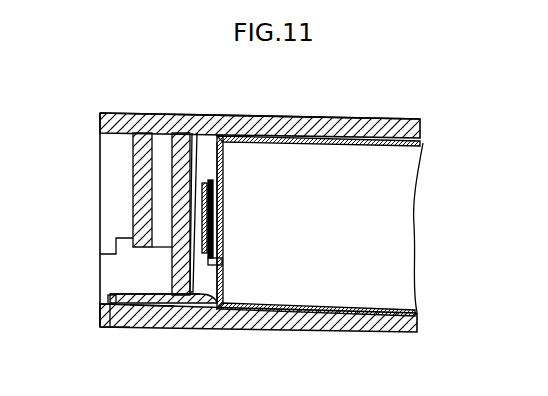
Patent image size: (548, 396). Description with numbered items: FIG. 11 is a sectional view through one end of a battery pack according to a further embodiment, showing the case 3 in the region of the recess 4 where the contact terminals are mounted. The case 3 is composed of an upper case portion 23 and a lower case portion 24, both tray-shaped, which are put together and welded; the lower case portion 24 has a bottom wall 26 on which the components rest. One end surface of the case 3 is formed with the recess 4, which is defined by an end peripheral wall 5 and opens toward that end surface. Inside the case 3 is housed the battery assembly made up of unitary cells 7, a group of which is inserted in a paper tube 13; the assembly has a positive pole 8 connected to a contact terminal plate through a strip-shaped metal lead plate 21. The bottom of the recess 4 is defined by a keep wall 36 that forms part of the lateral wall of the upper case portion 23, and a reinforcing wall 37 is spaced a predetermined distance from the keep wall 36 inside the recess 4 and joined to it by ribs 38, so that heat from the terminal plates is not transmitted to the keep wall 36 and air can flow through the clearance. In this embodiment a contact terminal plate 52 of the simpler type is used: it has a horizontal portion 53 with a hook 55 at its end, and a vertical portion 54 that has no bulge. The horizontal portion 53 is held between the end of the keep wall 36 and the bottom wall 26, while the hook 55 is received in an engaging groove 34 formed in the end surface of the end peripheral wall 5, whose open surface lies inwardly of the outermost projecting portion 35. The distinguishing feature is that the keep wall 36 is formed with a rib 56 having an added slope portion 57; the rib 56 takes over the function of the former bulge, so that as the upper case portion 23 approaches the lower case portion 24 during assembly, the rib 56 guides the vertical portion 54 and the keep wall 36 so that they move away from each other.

The case 3 is at (421, 117).
The recess 4 is at (114, 199).
The end peripheral wall 5 is at (152, 314).
The unitary cells 7 is at (408, 188).
The positive pole 8 is at (223, 210).
The paper tube 13 is at (422, 143).
The metal lead plate 21 is at (223, 172).
The upper case portion 23 is at (388, 117).
The lower case portion 24 is at (372, 333).
The bottom wall 26 is at (311, 313).
The engaging groove 34 is at (120, 313).
The outermost projecting portion 35 is at (117, 318).
The keep wall 36 is at (185, 130).
The reinforcing wall 37 is at (133, 170).
The ribs 38 is at (163, 129).
The contact terminal plate 52 is at (129, 291).
The horizontal portion 53 is at (180, 301).
The vertical portion 54 is at (224, 264).
The hook 55 is at (112, 300).
The rib 56 is at (261, 131).
The slope portion 57 is at (212, 264).